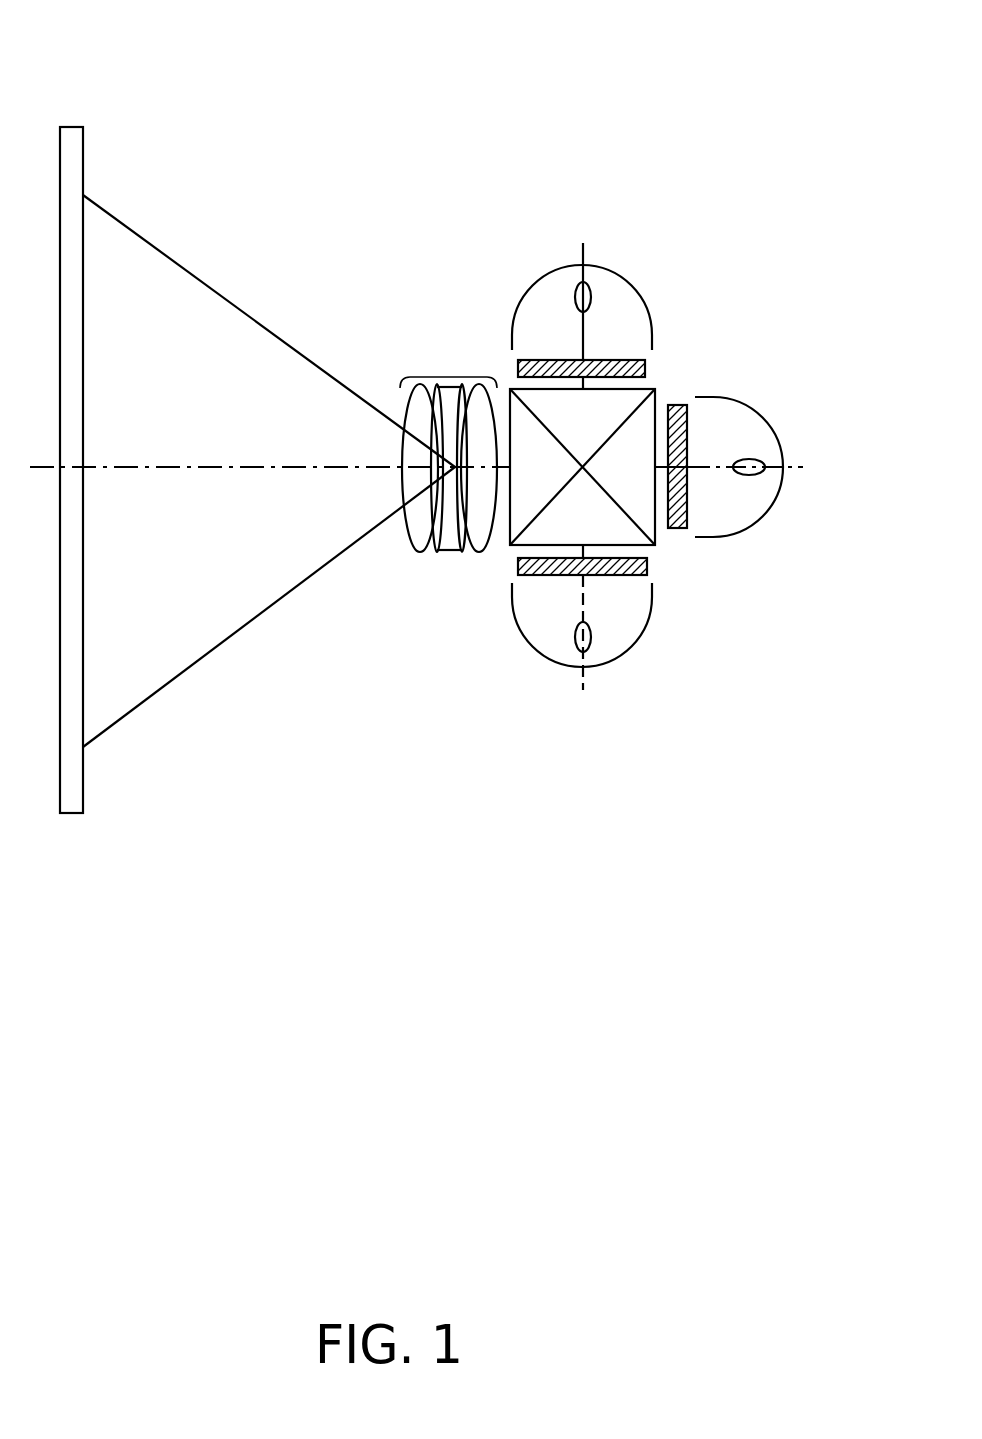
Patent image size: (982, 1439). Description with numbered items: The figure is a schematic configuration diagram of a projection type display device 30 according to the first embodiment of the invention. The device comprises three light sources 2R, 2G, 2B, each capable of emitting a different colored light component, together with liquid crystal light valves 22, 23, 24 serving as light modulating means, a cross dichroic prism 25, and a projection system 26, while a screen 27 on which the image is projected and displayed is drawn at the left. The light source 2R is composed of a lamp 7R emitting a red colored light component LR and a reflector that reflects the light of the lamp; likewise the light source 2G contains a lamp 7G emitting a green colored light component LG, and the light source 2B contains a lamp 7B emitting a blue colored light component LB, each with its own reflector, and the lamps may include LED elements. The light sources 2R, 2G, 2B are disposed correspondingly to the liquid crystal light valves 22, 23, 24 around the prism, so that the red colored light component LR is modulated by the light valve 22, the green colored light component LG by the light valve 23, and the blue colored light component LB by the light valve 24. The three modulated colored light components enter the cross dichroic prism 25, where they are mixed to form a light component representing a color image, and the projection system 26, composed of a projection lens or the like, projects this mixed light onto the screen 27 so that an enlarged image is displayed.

The projection type display device 30 is at (398, 183).
The light source 2R is at (656, 260).
The light source 2G is at (770, 471).
The light source 2B is at (627, 671).
The lamp 7R is at (587, 284).
The lamp 7G is at (751, 459).
The lamp 7B is at (592, 647).
The red colored light component LR is at (583, 327).
The green colored light component LG is at (713, 470).
The blue colored light component LB is at (585, 605).
The liquid crystal light valve 22 is at (517, 366).
The liquid crystal light valve 23 is at (675, 402).
The liquid crystal light valve 24 is at (517, 570).
The cross dichroic prism 25 is at (510, 543).
The projection system 26 is at (427, 374).
The screen 27 is at (84, 713).